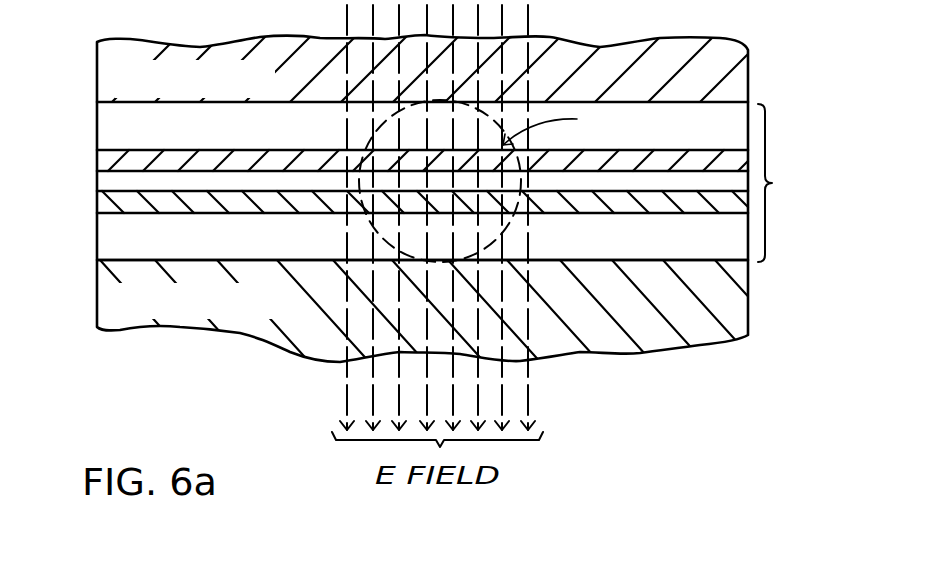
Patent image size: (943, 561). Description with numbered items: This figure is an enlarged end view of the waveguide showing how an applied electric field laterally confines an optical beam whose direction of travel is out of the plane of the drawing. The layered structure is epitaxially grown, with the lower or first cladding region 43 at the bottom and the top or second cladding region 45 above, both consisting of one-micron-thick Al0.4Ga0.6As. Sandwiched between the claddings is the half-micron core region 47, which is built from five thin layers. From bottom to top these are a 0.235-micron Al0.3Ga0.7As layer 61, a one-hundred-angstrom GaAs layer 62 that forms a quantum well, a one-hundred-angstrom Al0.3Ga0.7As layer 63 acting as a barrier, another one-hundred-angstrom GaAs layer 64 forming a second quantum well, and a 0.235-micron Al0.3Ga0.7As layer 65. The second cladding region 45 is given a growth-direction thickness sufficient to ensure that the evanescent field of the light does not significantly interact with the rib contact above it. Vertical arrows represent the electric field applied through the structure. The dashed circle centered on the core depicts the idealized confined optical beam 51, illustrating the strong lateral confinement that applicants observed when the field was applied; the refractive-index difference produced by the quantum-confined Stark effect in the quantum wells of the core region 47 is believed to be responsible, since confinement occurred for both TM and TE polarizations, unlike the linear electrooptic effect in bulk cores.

The second cladding region 45 is at (742, 78).
The first cladding region 43 is at (736, 287).
The core region 47 is at (441, 183).
The Al0.3Ga0.7As layer 65 is at (100, 126).
The GaAs layer (quantum well) 64 is at (100, 159).
The Al0.3Ga0.7As layer 63 is at (100, 185).
The GaAs layer (quantum well) 62 is at (100, 208).
The Al0.3Ga0.7As layer 61 is at (100, 243).
The confined optical beam 51 is at (362, 137).